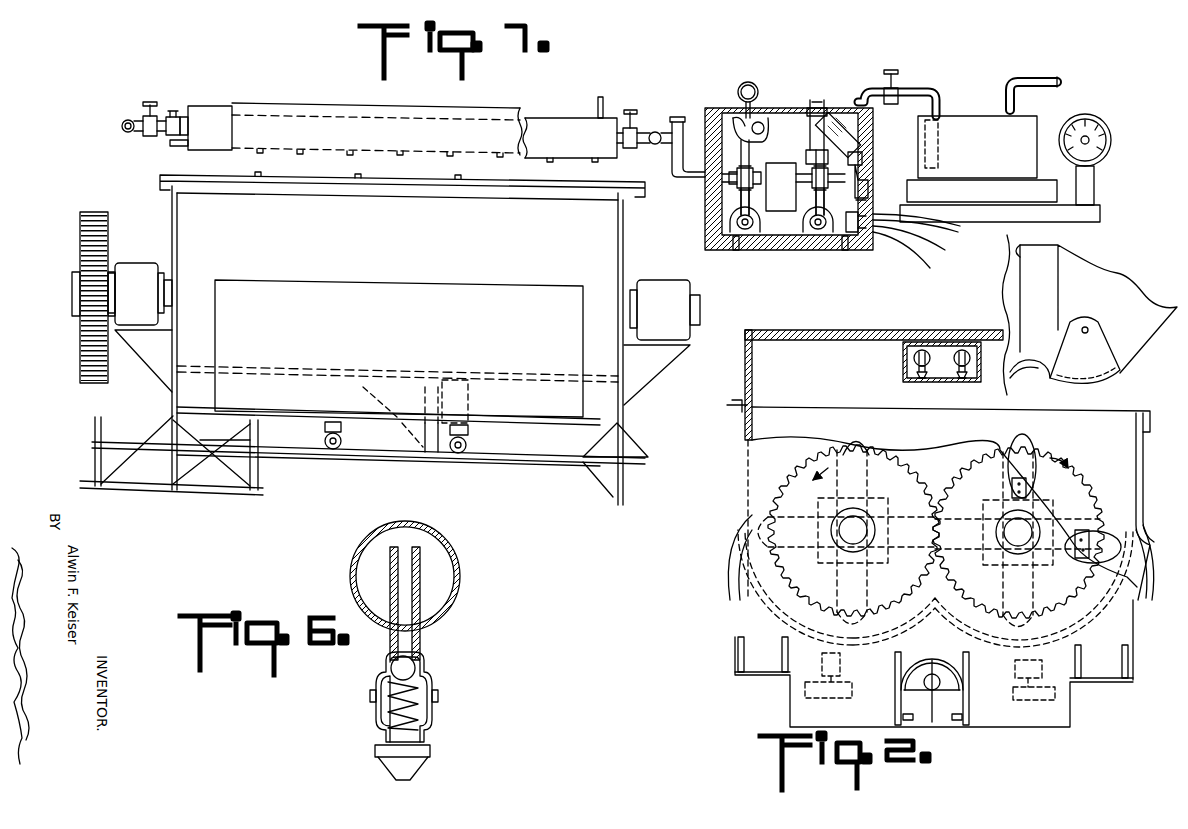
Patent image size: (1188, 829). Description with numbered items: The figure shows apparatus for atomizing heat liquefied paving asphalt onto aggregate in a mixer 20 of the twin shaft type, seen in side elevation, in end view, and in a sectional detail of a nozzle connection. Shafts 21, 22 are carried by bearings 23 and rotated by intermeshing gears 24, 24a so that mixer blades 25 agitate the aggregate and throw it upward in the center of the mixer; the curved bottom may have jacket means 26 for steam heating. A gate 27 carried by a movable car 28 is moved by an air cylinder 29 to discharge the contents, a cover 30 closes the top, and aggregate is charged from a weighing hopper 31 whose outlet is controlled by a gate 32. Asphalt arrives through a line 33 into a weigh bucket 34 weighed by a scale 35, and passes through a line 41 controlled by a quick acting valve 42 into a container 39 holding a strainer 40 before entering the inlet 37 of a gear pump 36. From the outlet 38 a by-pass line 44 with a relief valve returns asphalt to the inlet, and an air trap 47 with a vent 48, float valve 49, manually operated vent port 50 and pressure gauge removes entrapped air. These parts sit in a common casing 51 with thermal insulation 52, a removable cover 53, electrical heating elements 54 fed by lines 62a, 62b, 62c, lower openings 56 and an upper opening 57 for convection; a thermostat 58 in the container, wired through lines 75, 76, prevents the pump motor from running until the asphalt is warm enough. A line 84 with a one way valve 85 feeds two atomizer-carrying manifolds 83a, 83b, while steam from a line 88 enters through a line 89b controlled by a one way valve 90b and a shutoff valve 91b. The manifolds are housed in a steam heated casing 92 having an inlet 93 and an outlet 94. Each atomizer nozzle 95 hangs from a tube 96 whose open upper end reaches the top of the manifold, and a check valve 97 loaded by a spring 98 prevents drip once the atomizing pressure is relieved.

In FIG. 1, the mixer 20 is at (628, 238).
In FIG. 2, the mixer 20 is at (1142, 484).
In FIG. 2, the shaft 21 is at (1030, 535).
In FIG. 2, the shaft 22 is at (856, 528).
In FIG. 1, the bearings 23 is at (135, 263).
In FIG. 2, the intermeshing gear 24 is at (789, 482).
In FIG. 1, the intermeshing gear 24a is at (80, 240).
In FIG. 2, the intermeshing gear 24a is at (940, 494).
In FIG. 2, the mixer blades 25 is at (864, 450).
In FIG. 2, the jacket means 26 is at (730, 551).
In FIG. 1, the gate 27 is at (469, 381).
In FIG. 2, the gate 27 is at (910, 610).
In FIG. 1, the movable car 28 is at (470, 426).
In FIG. 1, the air cylinder 29 is at (254, 472).
In FIG. 2, the air cylinder 29 is at (982, 720).
In FIG. 1, the cover 30 is at (334, 105).
In FIG. 2, the cover 30 is at (780, 330).
In FIG. 2, the weighing hopper 31 is at (1142, 330).
In FIG. 2, the gate 32 is at (1110, 378).
In FIG. 1, the line 33 is at (1043, 82).
In FIG. 1, the weigh bucket 34 is at (1040, 130).
In FIG. 1, the scale 35 is at (1094, 184).
In FIG. 1, the gear pump 36 is at (782, 163).
In FIG. 1, the inlet 37 is at (815, 168).
In FIG. 1, the outlet 38 is at (752, 168).
In FIG. 1, the container 39 is at (826, 106).
In FIG. 1, the strainer 40 is at (858, 130).
In FIG. 1, the line 41 is at (912, 92).
In FIG. 1, the valve 42 is at (890, 82).
In FIG. 1, the by-pass line 44 is at (752, 230).
In FIG. 1, the air trap 47 is at (762, 124).
In FIG. 1, the vent 48 is at (736, 108).
In FIG. 1, the float valve 49 is at (810, 102).
In FIG. 1, the manually operated vent port 50 is at (752, 82).
In FIG. 1, the casing 51 is at (741, 94).
In FIG. 1, the thermal insulation 52 is at (867, 232).
In FIG. 1, the removable cover 53 is at (678, 119).
In FIG. 1, the electrical heating elements 54 is at (793, 250).
In FIG. 1, the openings 56 is at (735, 255).
In FIG. 1, the opening 57 is at (822, 101).
In FIG. 1, the thermostat 58 is at (862, 153).
In FIG. 1, the line 62a is at (949, 234).
In FIG. 1, the line 62b is at (947, 250).
In FIG. 1, the line 62c is at (932, 268).
In FIG. 1, the line 75 is at (868, 178).
In FIG. 1, the line 76 is at (868, 200).
In FIG. 2, the atomizer-carrying manifold 83a is at (920, 348).
In FIG. 6, the atomizer-carrying manifold 83a is at (458, 562).
In FIG. 2, the atomizer-carrying manifold 83b is at (964, 348).
In FIG. 1, the line 84 is at (696, 183).
In FIG. 1, the one way valve 85 is at (657, 126).
In FIG. 1, the line 88 is at (123, 128).
In FIG. 1, the line 89b is at (190, 116).
In FIG. 1, the one way valve 90b is at (173, 112).
In FIG. 1, the manually operable shutoff valve 91b is at (148, 116).
In FIG. 1, the casing 92 is at (551, 118).
In FIG. 2, the casing 92 is at (904, 360).
In FIG. 1, the inlet 93 is at (600, 97).
In FIG. 1, the outlet 94 is at (168, 146).
In FIG. 2, the atomizer nozzle 95 is at (963, 380).
In FIG. 6, the atomizer nozzle 95 is at (430, 755).
In FIG. 6, the tube 96 is at (420, 640).
In FIG. 6, the check valve 97 is at (412, 670).
In FIG. 6, the spring 98 is at (418, 718).